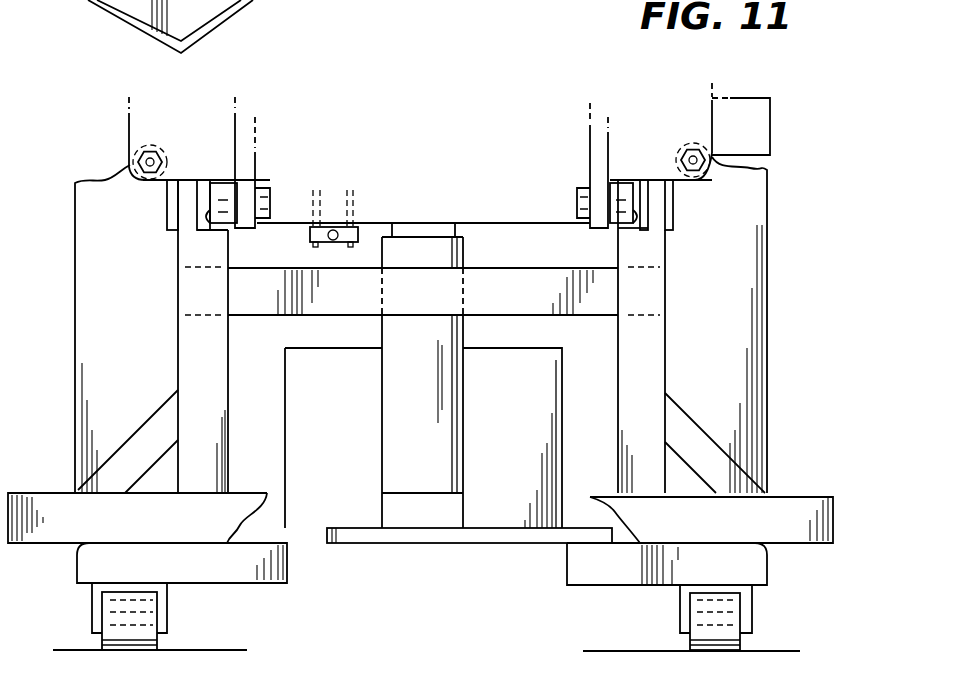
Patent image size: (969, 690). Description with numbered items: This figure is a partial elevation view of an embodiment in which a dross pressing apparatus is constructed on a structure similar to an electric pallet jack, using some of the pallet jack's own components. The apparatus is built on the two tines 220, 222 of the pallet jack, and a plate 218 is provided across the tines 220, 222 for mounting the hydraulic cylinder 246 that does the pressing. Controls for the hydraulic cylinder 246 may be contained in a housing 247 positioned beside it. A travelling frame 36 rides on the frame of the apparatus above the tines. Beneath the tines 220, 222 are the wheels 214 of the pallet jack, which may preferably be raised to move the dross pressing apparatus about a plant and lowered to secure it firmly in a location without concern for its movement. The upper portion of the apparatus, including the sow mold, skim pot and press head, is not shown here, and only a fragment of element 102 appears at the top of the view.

The frame structure 102 is at (88, 0).
The travelling frame 36 is at (125, 157).
The housing 247 is at (563, 377).
The hydraulic cylinder 246 is at (465, 437).
The tine 220 is at (287, 575).
The plate 218 is at (478, 543).
The tine 222 is at (767, 565).
The wheels 214 is at (157, 642).